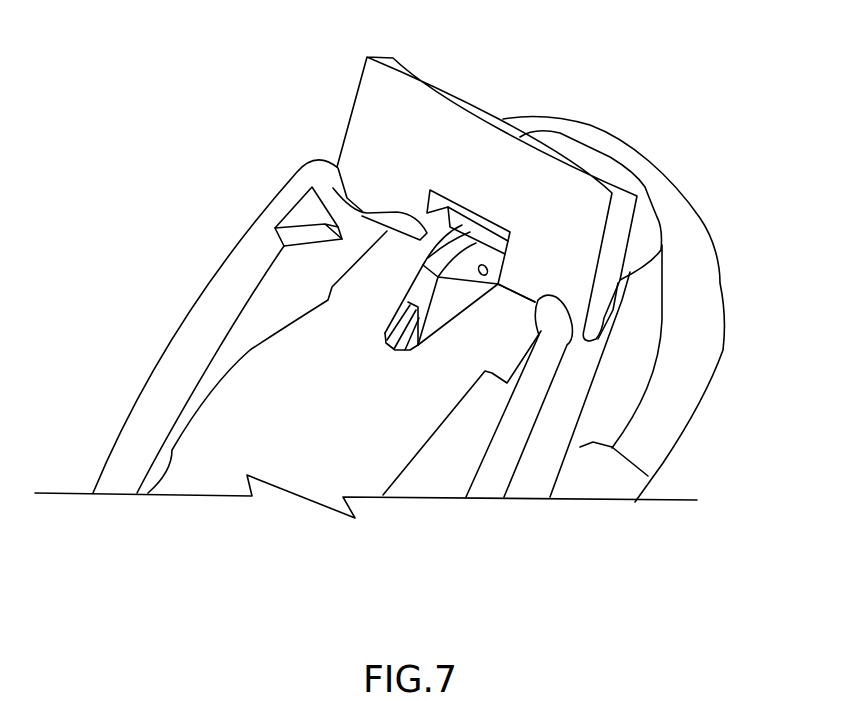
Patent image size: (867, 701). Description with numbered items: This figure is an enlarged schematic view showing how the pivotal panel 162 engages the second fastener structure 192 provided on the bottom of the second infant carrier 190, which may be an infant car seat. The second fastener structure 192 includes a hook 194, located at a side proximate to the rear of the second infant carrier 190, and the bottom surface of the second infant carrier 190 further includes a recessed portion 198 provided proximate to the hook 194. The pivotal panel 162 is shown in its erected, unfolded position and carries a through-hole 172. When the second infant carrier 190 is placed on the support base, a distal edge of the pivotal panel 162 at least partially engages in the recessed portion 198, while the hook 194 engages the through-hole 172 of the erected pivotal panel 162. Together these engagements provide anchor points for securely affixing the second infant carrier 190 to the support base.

The pivotal panel 162 is at (475, 105).
The through-hole 172 is at (477, 217).
The second infant carrier 190 is at (678, 398).
The second fastener structure 192 is at (160, 230).
The hook 194 is at (333, 188).
The recessed portion 198 is at (592, 340).